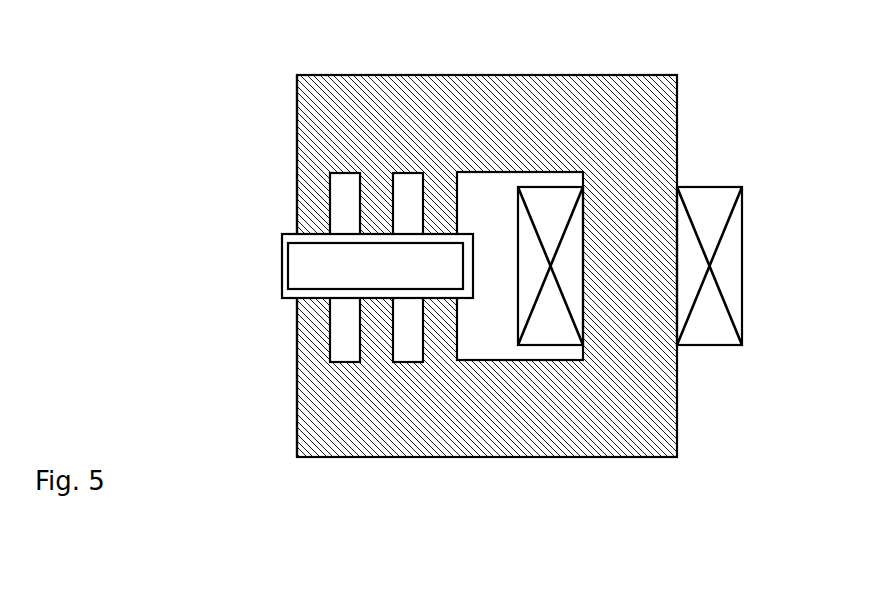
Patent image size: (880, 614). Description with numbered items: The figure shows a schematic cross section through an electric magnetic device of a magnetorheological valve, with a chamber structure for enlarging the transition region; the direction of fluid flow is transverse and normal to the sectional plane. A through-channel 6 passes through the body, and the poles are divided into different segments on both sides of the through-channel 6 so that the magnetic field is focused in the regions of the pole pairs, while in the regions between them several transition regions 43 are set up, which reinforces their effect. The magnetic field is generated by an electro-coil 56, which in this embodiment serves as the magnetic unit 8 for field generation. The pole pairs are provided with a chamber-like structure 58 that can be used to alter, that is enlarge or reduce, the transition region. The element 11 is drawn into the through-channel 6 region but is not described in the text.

The magnetic unit 8 is at (305, 80).
The transition regions 43 is at (403, 236).
The chamber-like structure 58 is at (283, 186).
The through-channel 6 is at (280, 234).
The laminations 11 is at (440, 285).
The electro-coil 56 is at (710, 195).